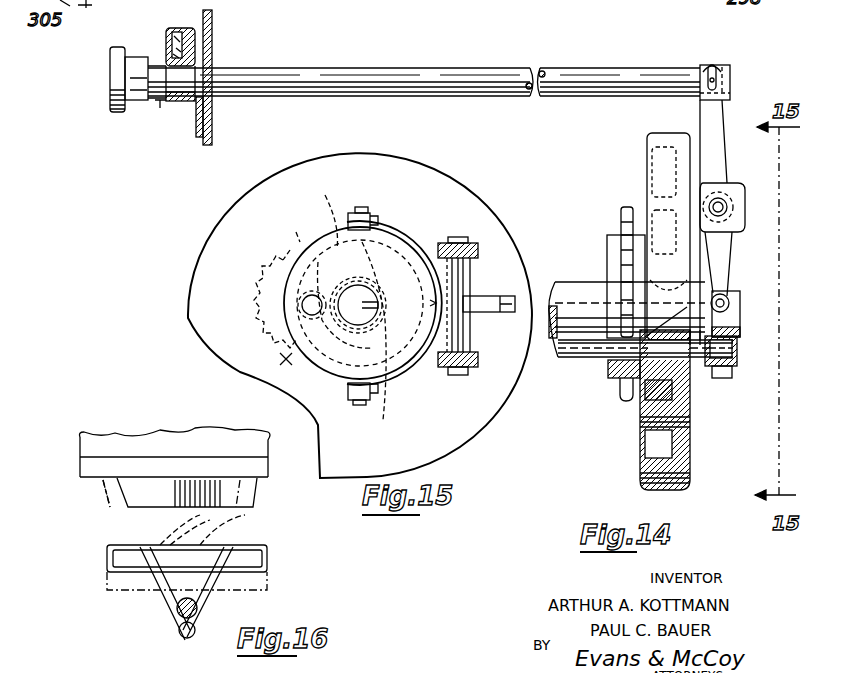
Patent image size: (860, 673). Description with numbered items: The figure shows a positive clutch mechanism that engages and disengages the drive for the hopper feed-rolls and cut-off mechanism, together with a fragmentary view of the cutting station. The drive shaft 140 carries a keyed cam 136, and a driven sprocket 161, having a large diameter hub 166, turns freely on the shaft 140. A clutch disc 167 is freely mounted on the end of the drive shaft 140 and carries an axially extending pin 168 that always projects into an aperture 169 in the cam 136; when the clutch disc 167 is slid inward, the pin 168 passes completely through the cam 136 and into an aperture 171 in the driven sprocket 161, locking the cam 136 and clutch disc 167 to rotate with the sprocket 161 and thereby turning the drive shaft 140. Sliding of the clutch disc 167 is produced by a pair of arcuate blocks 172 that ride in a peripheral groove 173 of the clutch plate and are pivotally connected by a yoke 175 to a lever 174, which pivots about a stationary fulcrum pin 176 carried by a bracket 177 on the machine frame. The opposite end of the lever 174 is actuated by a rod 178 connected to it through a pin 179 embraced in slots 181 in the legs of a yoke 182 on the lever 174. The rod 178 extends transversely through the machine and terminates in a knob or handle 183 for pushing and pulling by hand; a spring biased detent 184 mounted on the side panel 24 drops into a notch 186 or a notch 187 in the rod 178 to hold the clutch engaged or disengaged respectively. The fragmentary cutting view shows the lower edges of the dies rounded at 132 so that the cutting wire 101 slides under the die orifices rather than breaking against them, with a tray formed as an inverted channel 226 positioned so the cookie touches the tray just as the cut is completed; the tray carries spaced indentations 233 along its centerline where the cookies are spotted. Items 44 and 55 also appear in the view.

In FIG. 14, the knob or handle 183 is at (110, 75).
In FIG. 14, the spring biased detent 184 is at (165, 62).
In FIG. 14, the notch 186 is at (160, 100).
In FIG. 14, the notch 187 is at (197, 72).
In FIG. 14, the side panel 24 is at (213, 120).
In FIG. 14, the rod 178 is at (437, 73).
In FIG. 14, the slots 181 is at (703, 67).
In FIG. 14, the pin 179 is at (711, 66).
In FIG. 14, the yoke 182 is at (700, 97).
In FIG. 14, the lever 174 is at (722, 113).
In FIG. 15, the lever 174 is at (464, 367).
In FIG. 14, the cam 136 is at (647, 140).
In FIG. 15, the cam 136 is at (482, 193).
In FIG. 14, the driven sprocket 161 is at (621, 215).
In FIG. 15, the driven sprocket 161 is at (270, 273).
In FIG. 14, the hub 166 is at (612, 248).
In FIG. 15, the hub 166 is at (290, 323).
In FIG. 14, the fulcrum pin 176 is at (720, 205).
In FIG. 15, the fulcrum pin 176 is at (465, 227).
In FIG. 14, the bracket 177 is at (745, 205).
In FIG. 15, the bracket 177 is at (427, 353).
In FIG. 14, the drive shaft 140 is at (572, 330).
In FIG. 15, the drive shaft 140 is at (357, 322).
In FIG. 14, the arcuate blocks 172 is at (742, 317).
In FIG. 15, the arcuate blocks 172 is at (325, 196).
In FIG. 14, the aperture 171 is at (615, 360).
In FIG. 15, the aperture 171 is at (318, 262).
In FIG. 14, the clutch disc 167 is at (737, 368).
In FIG. 15, the clutch disc 167 is at (360, 405).
In FIG. 14, the groove 173 is at (720, 378).
In FIG. 15, the groove 173 is at (266, 361).
In FIG. 14, the aperture 169 is at (668, 340).
In FIG. 14, the pin 168 is at (695, 365).
In FIG. 15, the pin 168 is at (310, 303).
In FIG. 15, the yoke 175 is at (425, 240).
In FIG. 16, the table 44 is at (115, 437).
In FIG. 16, the table edge 55 is at (88, 465).
In FIG. 16, the rounded lower edges 132 is at (110, 507).
In FIG. 16, the wire 101 is at (180, 513).
In FIG. 16, the indentations 233 is at (238, 520).
In FIG. 16, the inverted channels 226 is at (257, 543).